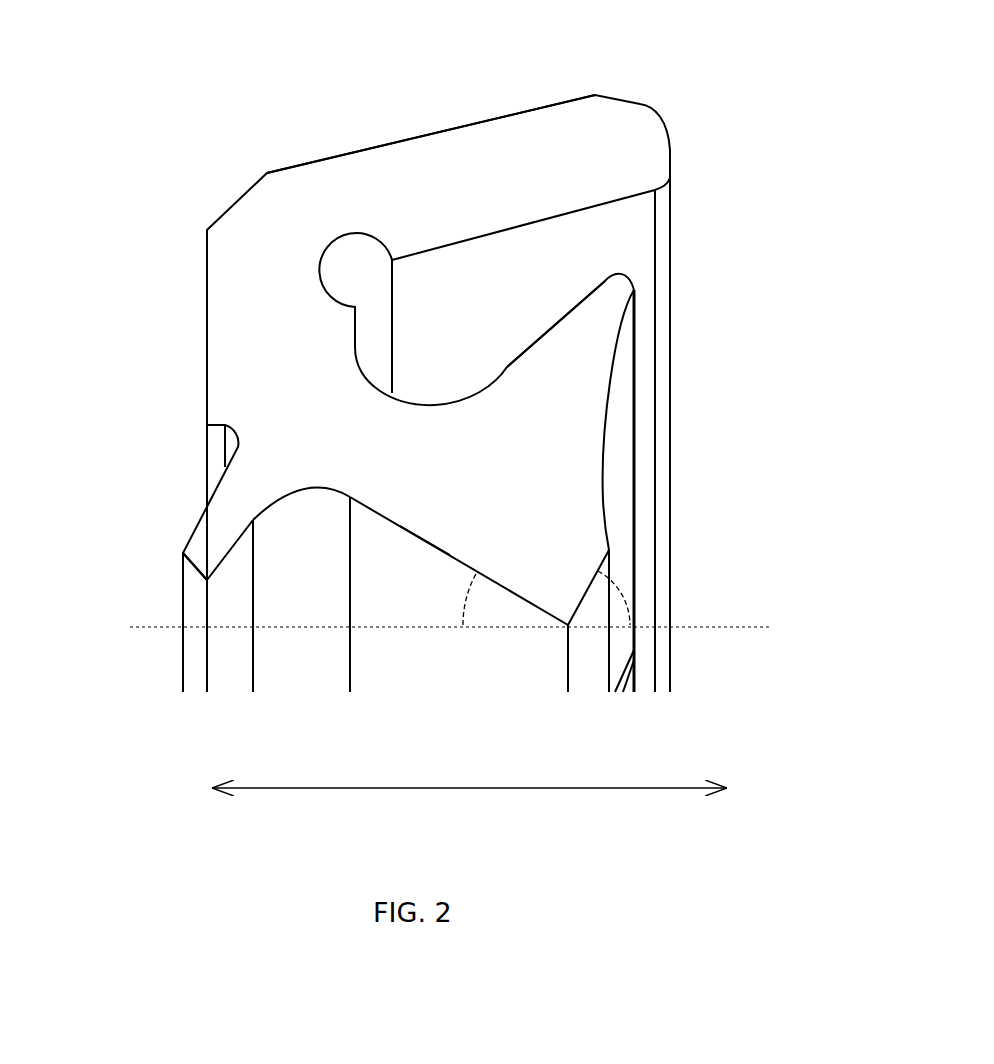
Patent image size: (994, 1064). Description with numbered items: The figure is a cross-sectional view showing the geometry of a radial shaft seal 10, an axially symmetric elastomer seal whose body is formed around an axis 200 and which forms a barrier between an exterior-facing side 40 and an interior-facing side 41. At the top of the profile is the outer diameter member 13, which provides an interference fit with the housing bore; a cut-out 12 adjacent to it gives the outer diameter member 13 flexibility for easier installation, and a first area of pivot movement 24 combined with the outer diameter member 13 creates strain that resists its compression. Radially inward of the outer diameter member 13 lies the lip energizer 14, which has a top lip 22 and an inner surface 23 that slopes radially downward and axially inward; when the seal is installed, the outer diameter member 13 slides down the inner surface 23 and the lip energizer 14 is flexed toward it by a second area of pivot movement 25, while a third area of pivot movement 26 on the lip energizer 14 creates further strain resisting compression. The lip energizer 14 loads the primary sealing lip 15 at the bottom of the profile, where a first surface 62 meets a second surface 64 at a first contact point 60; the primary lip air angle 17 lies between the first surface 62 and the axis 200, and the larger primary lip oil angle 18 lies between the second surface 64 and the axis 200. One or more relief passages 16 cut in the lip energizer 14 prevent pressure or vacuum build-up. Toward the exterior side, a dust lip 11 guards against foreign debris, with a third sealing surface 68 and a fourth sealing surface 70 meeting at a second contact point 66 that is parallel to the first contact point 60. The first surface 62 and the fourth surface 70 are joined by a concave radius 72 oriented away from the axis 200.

The radial shaft seal 10 is at (450, 393).
The dust lip 11 is at (193, 577).
The cut-out 12 is at (316, 277).
The outer diameter member 13 is at (521, 111).
The lip energizer 14 is at (623, 268).
The primary sealing lip 15 is at (576, 643).
The relief passage 16 is at (626, 673).
The primary lip air angle 17 is at (487, 598).
The primary lip oil angle 18 is at (611, 598).
The top lip 22 is at (634, 290).
The inner surface 23 is at (514, 358).
The first area of pivot movement 24 is at (312, 206).
The second area of pivot movement 25 is at (353, 449).
The third area of pivot movement 26 is at (574, 441).
The exterior-facing side 40 is at (80, 203).
The interior-facing side 41 is at (845, 217).
The first contact point 60 is at (565, 667).
The first surface 62 is at (422, 543).
The second surface 64 is at (585, 595).
The second contact point 66 is at (205, 678).
The third sealing surface 68 is at (188, 550).
The fourth sealing surface 70 is at (223, 558).
The concave radius 72 is at (296, 488).
The axis 200 is at (512, 788).